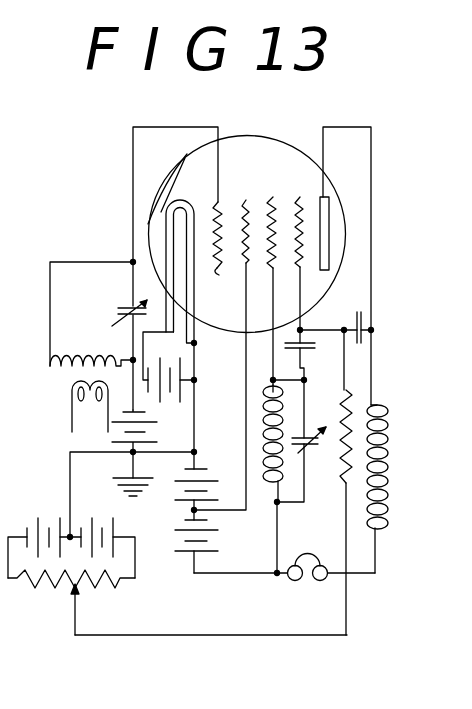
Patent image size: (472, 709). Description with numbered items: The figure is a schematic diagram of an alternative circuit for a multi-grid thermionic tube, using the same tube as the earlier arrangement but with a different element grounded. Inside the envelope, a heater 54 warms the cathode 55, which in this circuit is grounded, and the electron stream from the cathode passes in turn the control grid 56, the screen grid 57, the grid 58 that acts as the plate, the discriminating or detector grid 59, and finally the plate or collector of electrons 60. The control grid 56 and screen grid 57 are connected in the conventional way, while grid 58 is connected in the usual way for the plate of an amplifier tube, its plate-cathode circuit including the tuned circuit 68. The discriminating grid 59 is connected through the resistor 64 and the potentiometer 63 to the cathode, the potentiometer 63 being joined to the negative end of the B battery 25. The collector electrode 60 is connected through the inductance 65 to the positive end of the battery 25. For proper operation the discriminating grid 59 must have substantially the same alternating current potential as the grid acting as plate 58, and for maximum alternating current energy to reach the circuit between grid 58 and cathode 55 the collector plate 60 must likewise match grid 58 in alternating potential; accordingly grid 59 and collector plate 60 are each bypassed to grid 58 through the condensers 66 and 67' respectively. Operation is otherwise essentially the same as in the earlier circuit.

The B battery 25 is at (218, 530).
The heater 54 is at (166, 222).
The cathode 55 is at (187, 154).
The control grid 56 is at (220, 202).
The screen grid 57 is at (245, 200).
The grid acting as the plate 58 is at (271, 197).
The discriminating grid 59 is at (298, 198).
The plate 60 is at (329, 218).
The potentiometer 63 is at (97, 588).
The resistor 64 is at (331, 413).
The inductance 65 is at (367, 505).
The condenser 66 is at (316, 343).
The condenser 67' is at (351, 309).
The tuned circuit 68 is at (278, 486).